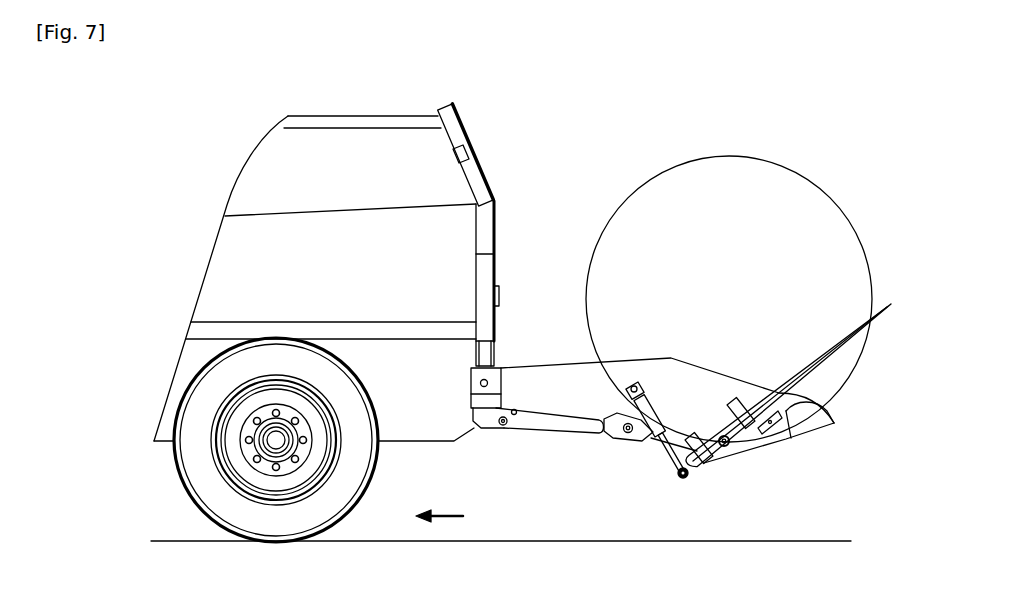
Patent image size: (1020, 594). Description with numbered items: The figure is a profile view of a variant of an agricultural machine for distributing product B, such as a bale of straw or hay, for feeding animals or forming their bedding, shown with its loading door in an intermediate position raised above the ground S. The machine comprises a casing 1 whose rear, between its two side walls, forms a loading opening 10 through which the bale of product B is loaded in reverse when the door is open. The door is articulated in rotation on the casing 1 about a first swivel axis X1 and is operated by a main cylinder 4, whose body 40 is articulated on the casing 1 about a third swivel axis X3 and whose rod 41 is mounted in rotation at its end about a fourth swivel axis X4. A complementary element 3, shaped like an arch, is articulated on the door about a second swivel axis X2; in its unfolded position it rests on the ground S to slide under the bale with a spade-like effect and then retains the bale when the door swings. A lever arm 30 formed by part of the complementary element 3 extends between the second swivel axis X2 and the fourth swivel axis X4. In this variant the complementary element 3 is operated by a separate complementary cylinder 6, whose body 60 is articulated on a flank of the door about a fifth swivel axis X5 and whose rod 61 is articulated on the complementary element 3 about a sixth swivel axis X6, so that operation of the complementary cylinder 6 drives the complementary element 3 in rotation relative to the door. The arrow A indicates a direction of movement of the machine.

The casing 1 is at (198, 224).
The loading opening 10 is at (503, 200).
The body 60 is at (615, 398).
The body 40 is at (537, 400).
The first swivel axis X1 is at (470, 413).
The third swivel axis X3 is at (502, 426).
The main cylinder 4 is at (544, 439).
The rod 41 is at (612, 440).
The fourth swivel axis X4 is at (627, 434).
The complementary cylinder 6 is at (636, 378).
The fifth swivel axis X5 is at (632, 386).
The rod 61 is at (670, 456).
The sixth swivel axis X6 is at (683, 478).
The lever arm 30 is at (703, 460).
The second swivel axis X2 is at (730, 446).
The complementary element 3 is at (854, 368).
The product B is at (840, 238).
The ground S is at (168, 539).
The travel direction A is at (450, 516).